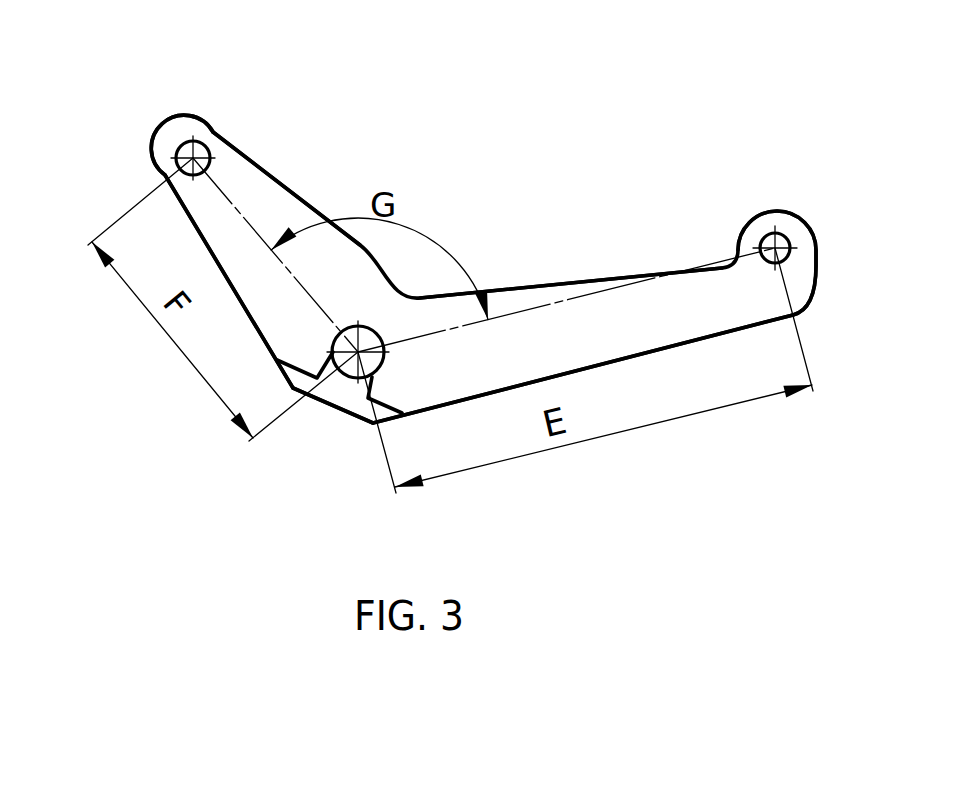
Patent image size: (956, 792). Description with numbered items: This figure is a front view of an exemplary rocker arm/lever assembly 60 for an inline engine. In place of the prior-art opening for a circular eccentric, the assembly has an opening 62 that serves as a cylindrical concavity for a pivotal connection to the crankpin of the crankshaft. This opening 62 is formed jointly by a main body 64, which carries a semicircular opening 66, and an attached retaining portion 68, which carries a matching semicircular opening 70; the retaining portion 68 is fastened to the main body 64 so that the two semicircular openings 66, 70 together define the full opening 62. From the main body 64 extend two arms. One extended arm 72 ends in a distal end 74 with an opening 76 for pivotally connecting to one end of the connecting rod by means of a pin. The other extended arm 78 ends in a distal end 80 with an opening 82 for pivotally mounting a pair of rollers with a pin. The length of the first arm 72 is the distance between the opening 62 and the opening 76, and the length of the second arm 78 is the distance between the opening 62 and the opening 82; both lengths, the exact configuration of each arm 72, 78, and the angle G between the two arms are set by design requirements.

The rocker arm/lever assembly 60 is at (632, 471).
The opening 62 is at (450, 328).
The main body 64 is at (512, 338).
The semicircular opening 66 is at (371, 327).
The retaining portion 68 is at (333, 403).
The semicircular opening 70 is at (345, 380).
The extended arm 72 is at (598, 280).
The distal end 74 is at (758, 213).
The opening 76 is at (776, 246).
The extended arm 78 is at (273, 182).
The distal end 80 is at (205, 127).
The opening 82 is at (193, 158).